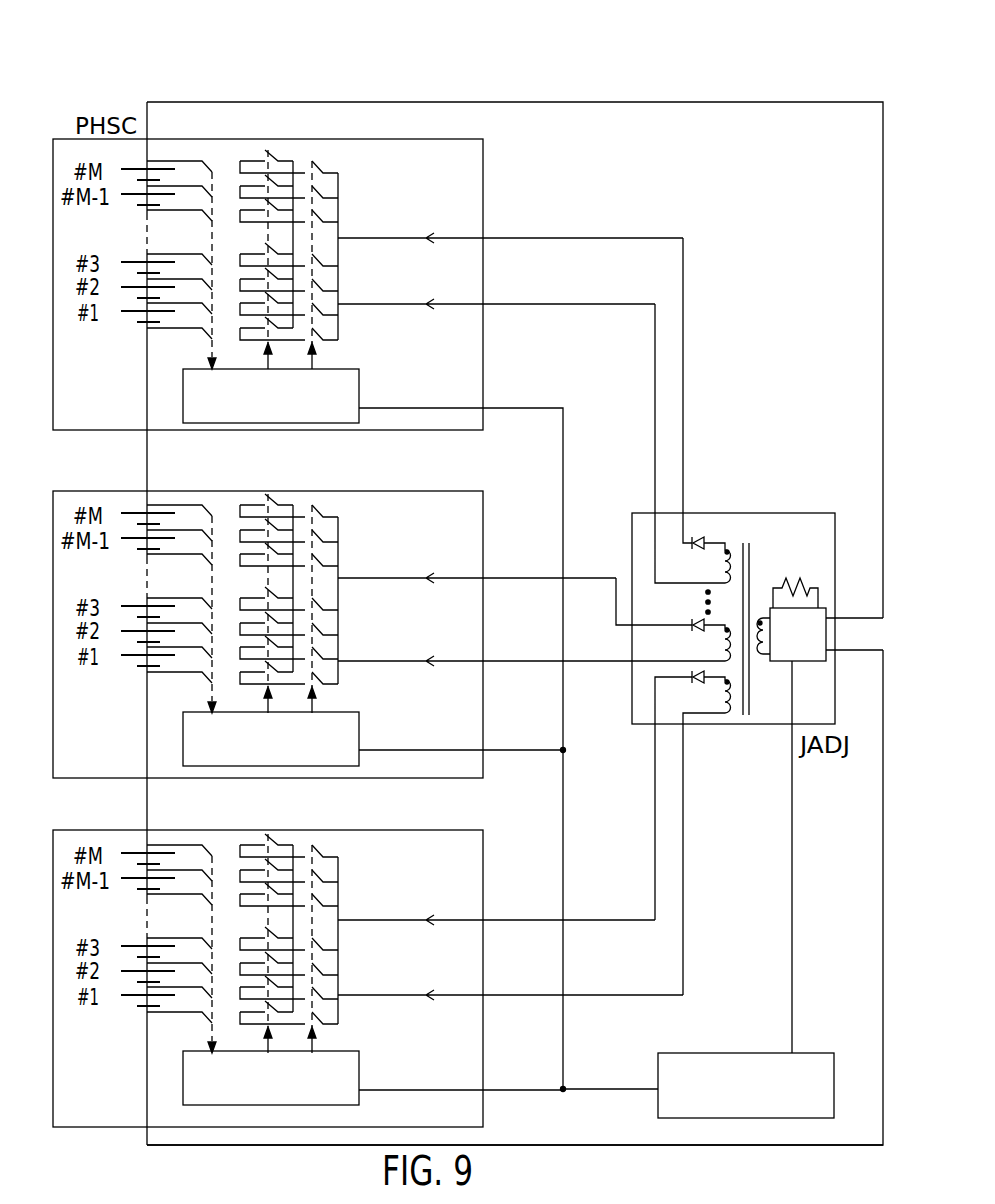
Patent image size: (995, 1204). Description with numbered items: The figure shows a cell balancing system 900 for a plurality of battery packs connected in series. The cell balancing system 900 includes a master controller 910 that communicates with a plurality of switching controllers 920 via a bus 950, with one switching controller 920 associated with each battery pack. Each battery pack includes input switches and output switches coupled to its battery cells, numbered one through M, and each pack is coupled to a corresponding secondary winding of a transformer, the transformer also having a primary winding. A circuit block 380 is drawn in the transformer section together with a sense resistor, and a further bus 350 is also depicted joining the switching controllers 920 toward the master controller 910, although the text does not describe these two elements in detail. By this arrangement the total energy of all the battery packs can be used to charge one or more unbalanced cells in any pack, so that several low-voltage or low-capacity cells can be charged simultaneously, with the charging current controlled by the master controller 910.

The cell balancing system 900 is at (150, 89).
The switching controller 920 is at (289, 408).
The communication bus 350 is at (563, 733).
The current sensing circuit 380 is at (815, 652).
The master controller 910 is at (805, 1053).
The bus 950 is at (563, 1145).